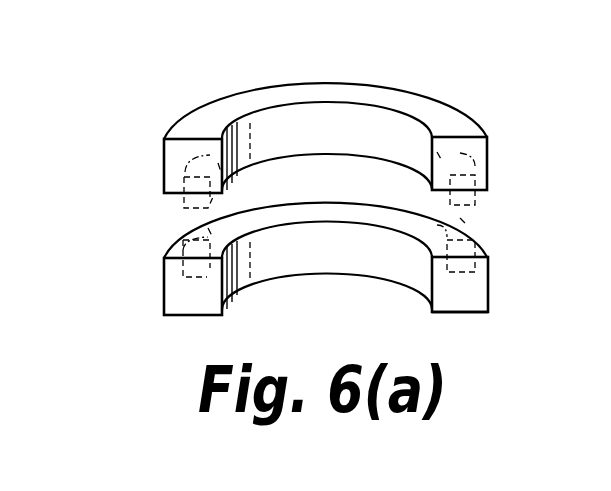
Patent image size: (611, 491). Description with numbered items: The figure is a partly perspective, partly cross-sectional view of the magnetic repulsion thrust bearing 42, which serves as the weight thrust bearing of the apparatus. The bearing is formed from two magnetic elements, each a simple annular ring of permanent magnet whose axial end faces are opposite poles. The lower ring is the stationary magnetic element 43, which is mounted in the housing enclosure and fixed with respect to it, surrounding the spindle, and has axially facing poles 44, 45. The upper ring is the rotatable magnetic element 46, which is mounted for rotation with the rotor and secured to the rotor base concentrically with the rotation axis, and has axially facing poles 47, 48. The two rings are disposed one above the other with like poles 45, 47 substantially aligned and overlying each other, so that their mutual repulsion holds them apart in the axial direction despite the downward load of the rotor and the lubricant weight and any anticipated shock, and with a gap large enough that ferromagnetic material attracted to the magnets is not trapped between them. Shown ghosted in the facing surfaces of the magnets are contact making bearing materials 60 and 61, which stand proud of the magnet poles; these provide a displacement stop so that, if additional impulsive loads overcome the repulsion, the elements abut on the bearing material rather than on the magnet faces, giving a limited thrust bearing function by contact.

The magnetic repulsion thrust bearing 42 is at (152, 186).
The stationary magnetic element 43 is at (482, 287).
The axially facing pole 44 is at (473, 313).
The axially facing pole 45 is at (485, 250).
The rotatable magnetic element 46 is at (483, 160).
The axially facing pole 47 is at (482, 190).
The axially facing pole 48 is at (433, 112).
The contact making bearing material 60 is at (190, 213).
The contact making bearing material 61 is at (187, 228).